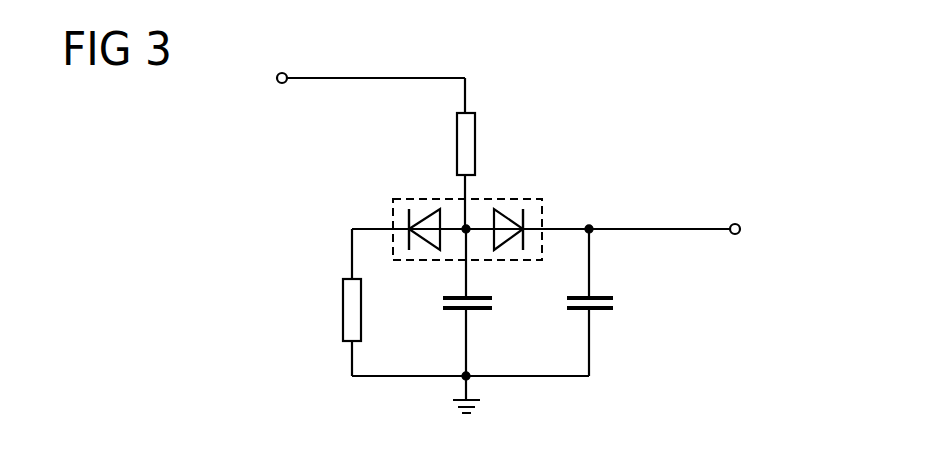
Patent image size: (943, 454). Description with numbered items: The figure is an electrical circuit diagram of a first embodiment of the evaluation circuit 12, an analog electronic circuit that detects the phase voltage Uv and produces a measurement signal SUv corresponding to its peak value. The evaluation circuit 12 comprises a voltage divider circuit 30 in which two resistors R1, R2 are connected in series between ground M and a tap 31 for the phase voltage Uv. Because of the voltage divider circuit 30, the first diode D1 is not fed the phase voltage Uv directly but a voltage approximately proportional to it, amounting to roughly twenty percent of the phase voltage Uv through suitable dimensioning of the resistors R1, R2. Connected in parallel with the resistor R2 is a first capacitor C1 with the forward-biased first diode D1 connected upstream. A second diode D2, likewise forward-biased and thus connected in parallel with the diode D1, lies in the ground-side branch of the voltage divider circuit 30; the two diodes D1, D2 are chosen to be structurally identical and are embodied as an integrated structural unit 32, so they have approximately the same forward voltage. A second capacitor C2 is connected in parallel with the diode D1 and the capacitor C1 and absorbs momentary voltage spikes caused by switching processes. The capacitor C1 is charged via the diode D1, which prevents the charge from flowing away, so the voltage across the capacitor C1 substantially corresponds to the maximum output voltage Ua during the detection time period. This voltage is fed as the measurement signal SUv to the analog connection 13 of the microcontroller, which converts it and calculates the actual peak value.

The evaluation circuit 12 is at (604, 122).
The analog connection 13 is at (747, 228).
The voltage divider circuit 30 is at (356, 208).
The tap 31 is at (277, 82).
The integrated structural unit 32 is at (542, 216).
The first resistor R1 is at (477, 128).
The second resistor R2 is at (343, 292).
The first diode D1 is at (512, 215).
The second diode D2 is at (425, 215).
The first capacitor C1 is at (603, 310).
The second capacitor C2 is at (457, 312).
The ground M is at (472, 387).
The phase voltage Uv is at (343, 78).
The output voltage Ua is at (562, 235).
The measurement signal SUv is at (685, 228).